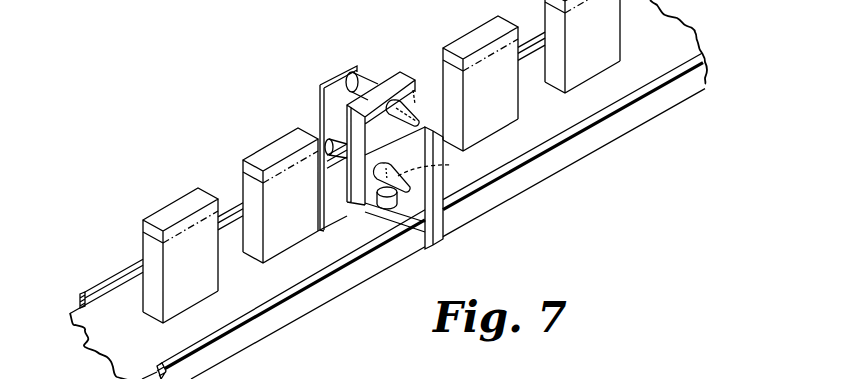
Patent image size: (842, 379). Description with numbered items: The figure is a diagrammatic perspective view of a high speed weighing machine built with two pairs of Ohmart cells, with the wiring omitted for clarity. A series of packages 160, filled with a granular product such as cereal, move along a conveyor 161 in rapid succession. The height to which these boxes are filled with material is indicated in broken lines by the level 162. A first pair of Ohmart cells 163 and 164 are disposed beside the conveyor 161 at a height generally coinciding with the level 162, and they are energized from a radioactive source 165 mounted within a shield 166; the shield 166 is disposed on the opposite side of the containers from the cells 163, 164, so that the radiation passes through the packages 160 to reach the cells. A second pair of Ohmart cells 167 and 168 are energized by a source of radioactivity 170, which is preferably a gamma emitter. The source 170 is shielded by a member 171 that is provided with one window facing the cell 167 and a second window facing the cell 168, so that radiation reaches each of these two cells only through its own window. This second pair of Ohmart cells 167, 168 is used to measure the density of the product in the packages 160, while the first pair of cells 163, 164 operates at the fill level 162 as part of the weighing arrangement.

The packages 160 is at (152, 249).
The conveyor 161 is at (103, 340).
The fill level 162 is at (183, 230).
The Ohmart cell 163 is at (334, 97).
The Ohmart cell 164 is at (373, 70).
The radioactive source 165 is at (415, 105).
The shield 166 is at (390, 117).
The Ohmart cell 167 is at (343, 167).
The Ohmart cell 168 is at (384, 209).
The source of radioactivity 170 is at (438, 167).
The shielding member 171 is at (376, 181).